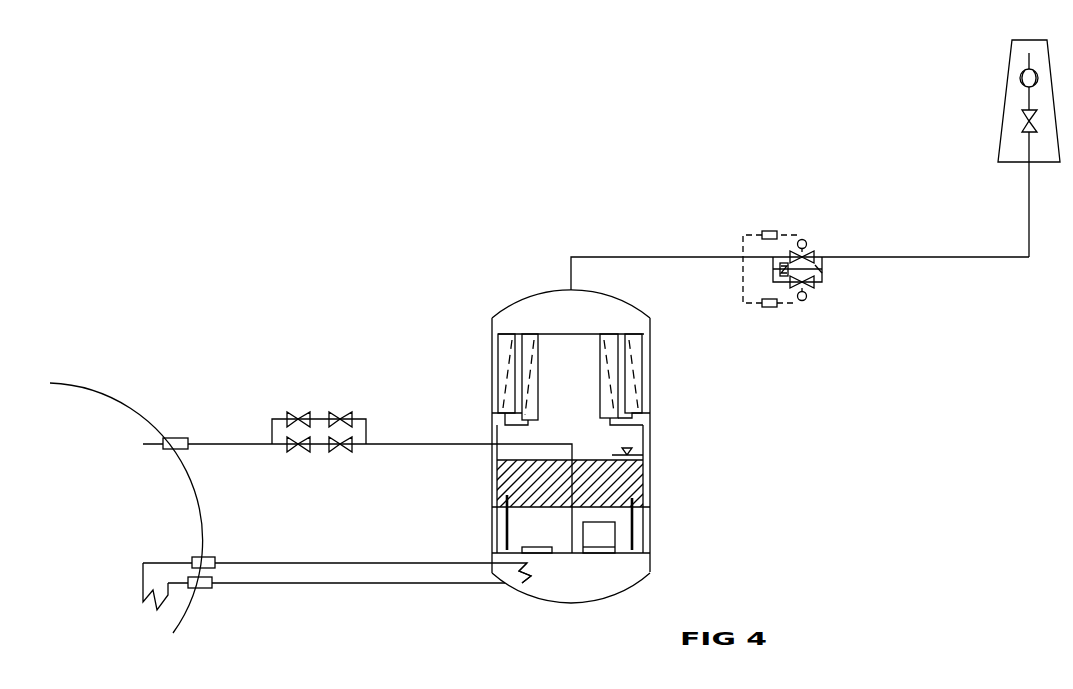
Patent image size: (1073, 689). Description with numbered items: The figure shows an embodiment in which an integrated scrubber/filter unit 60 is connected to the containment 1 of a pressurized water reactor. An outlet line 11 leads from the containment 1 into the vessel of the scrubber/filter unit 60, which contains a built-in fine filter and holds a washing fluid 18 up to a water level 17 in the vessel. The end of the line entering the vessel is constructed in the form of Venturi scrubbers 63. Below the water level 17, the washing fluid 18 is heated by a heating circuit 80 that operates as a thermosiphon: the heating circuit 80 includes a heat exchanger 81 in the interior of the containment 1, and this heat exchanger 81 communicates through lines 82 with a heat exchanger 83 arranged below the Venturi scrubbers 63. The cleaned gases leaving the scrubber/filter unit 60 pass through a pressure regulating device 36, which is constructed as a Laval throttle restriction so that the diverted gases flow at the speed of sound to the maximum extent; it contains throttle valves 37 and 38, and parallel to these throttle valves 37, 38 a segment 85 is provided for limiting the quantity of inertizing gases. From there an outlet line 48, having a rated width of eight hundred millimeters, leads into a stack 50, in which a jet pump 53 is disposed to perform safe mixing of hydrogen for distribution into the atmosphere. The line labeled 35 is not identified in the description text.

The containment 1 is at (110, 392).
The outlet line 11 is at (405, 443).
The water level 17 is at (643, 453).
The washing fluid 18 is at (525, 523).
The clean gas outlet line 35 is at (672, 256).
The pressure regulating device 36 is at (800, 240).
The throttle valve 37 is at (807, 288).
The throttle valve 38 is at (810, 254).
The outlet line 48 is at (1030, 212).
The stack 50 is at (1004, 122).
The jet pump 53 is at (1020, 78).
The integrated scrubber/filter unit 60 is at (491, 349).
The Venturi scrubbers 63 is at (600, 550).
The heating circuit 80 is at (372, 600).
The heat exchanger 81 is at (141, 580).
The lines 82 is at (435, 565).
The heat exchanger 83 is at (527, 574).
The segment 85 is at (822, 272).